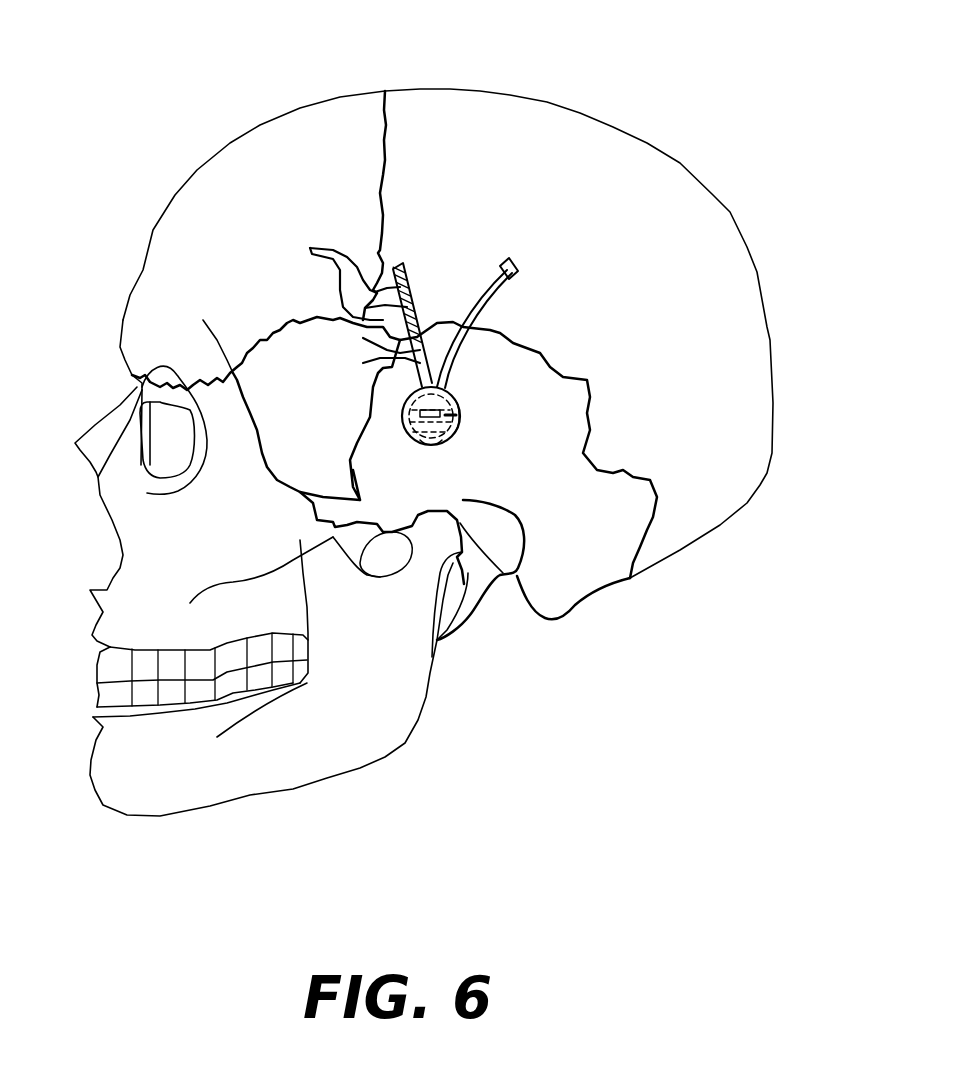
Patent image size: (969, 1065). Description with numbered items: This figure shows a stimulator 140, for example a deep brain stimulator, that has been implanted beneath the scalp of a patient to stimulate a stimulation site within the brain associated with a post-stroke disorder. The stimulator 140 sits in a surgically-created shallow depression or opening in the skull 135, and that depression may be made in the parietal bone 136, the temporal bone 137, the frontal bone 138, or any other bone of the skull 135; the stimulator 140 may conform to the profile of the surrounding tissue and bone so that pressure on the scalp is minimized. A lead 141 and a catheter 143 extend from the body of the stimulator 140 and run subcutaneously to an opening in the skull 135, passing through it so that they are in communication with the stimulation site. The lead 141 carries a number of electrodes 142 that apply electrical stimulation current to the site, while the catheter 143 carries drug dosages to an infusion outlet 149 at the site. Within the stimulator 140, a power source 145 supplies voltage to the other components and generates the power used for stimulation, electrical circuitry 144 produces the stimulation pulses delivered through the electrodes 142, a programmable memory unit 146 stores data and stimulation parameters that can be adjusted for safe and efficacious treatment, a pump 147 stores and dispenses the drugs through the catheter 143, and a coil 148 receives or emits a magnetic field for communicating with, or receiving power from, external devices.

The skull 135 is at (152, 130).
The parietal bone 136 is at (545, 137).
The temporal bone 137 is at (498, 378).
The frontal bone 138 is at (275, 150).
The stimulator 140 is at (410, 436).
The lead 141 is at (363, 338).
The electrodes 142 is at (325, 275).
The catheter 143 is at (495, 326).
The electrical circuitry 144 is at (458, 415).
The power source 145 is at (430, 445).
The programmable memory unit 146 is at (458, 418).
The pump 147 is at (407, 397).
The coil 148 is at (455, 415).
The infusion outlet 149 is at (513, 266).